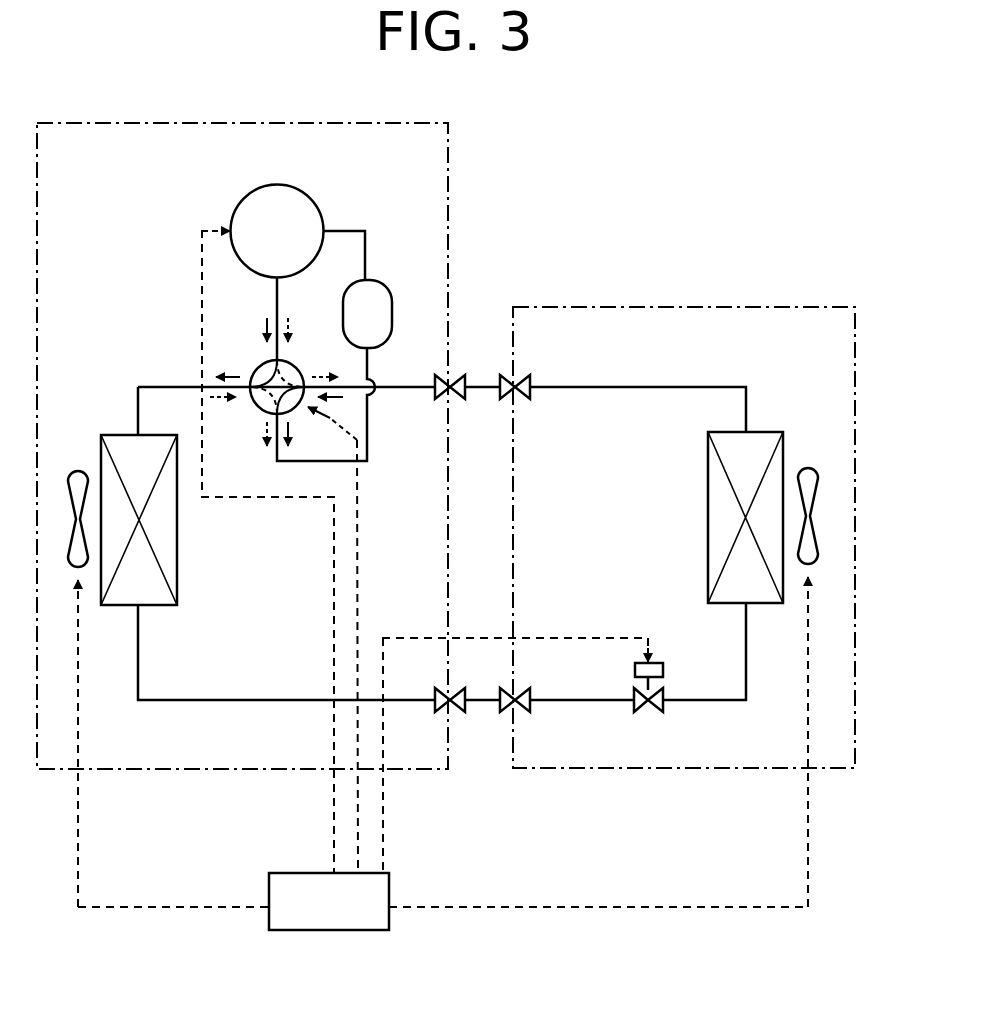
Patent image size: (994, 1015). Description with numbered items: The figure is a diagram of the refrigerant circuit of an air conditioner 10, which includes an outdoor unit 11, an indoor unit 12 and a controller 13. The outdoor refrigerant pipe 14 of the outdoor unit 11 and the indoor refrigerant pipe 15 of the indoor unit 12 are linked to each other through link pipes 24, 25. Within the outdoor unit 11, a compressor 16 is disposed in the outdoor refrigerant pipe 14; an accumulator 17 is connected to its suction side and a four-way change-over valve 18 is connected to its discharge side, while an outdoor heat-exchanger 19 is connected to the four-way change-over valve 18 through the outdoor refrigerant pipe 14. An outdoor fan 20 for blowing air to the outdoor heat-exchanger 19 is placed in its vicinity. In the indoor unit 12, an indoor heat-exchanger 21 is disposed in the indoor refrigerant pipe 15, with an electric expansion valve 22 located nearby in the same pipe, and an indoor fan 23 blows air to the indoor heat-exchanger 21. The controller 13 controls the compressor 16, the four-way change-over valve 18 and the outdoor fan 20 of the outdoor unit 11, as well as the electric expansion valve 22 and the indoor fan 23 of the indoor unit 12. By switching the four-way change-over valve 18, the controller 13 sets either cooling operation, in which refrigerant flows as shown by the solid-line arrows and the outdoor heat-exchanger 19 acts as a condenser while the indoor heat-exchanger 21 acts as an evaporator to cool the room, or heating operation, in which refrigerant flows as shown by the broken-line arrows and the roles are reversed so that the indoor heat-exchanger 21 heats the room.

The air conditioner 10 is at (654, 165).
The outdoor unit 11 is at (448, 195).
The indoor unit 12 is at (655, 307).
The controller 13 is at (326, 931).
The outdoor refrigerant pipe 14 is at (210, 702).
The indoor refrigerant pipe 15 is at (585, 702).
The compressor 16 is at (318, 208).
The accumulator 17 is at (388, 292).
The four-way change-over valve 18 is at (258, 370).
The outdoor heat-exchanger 19 is at (177, 585).
The outdoor fan 20 is at (78, 470).
The indoor heat-exchanger 21 is at (708, 460).
The electric expansion valve 22 is at (652, 708).
The indoor fan 23 is at (808, 467).
The link pipe 24 is at (479, 386).
The link pipe 25 is at (482, 702).